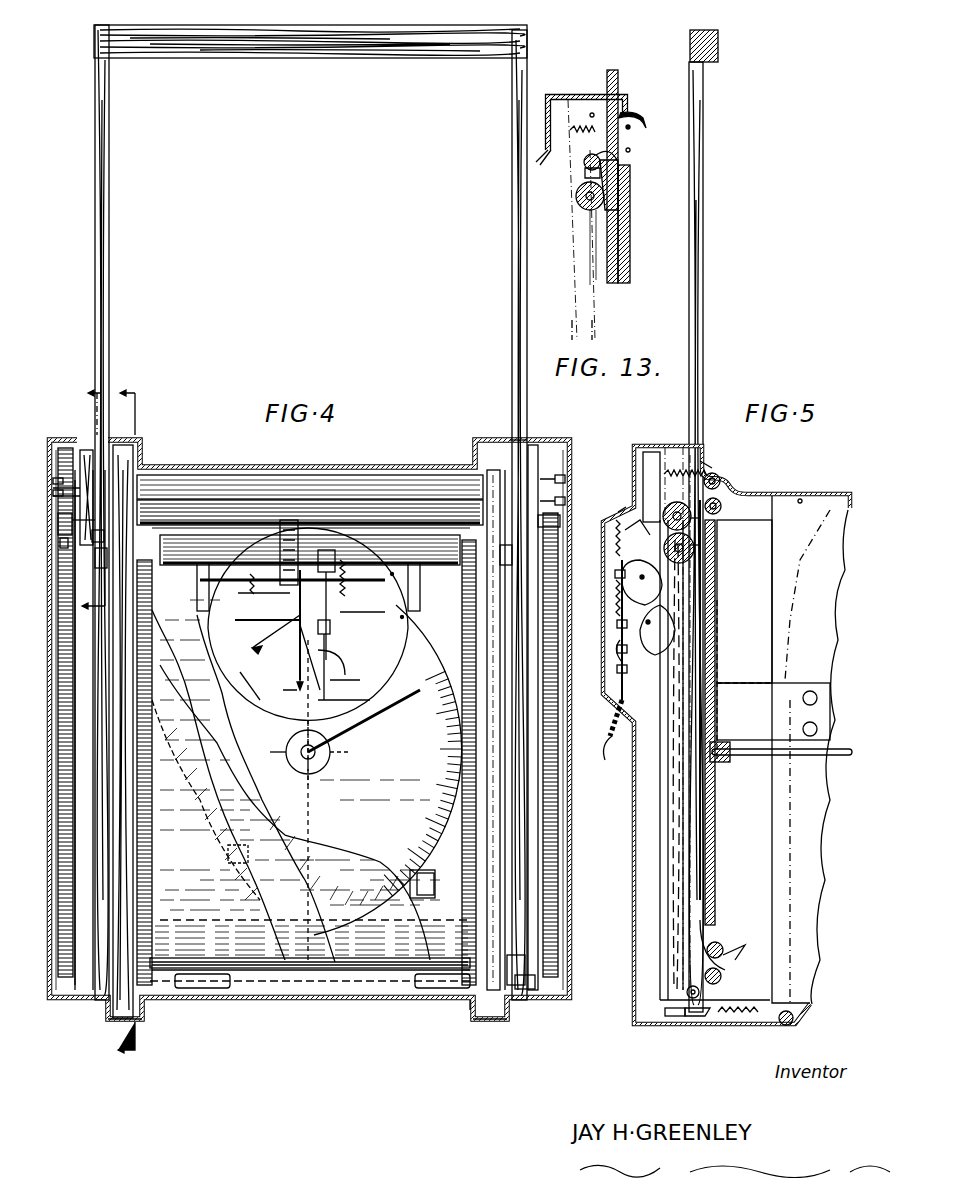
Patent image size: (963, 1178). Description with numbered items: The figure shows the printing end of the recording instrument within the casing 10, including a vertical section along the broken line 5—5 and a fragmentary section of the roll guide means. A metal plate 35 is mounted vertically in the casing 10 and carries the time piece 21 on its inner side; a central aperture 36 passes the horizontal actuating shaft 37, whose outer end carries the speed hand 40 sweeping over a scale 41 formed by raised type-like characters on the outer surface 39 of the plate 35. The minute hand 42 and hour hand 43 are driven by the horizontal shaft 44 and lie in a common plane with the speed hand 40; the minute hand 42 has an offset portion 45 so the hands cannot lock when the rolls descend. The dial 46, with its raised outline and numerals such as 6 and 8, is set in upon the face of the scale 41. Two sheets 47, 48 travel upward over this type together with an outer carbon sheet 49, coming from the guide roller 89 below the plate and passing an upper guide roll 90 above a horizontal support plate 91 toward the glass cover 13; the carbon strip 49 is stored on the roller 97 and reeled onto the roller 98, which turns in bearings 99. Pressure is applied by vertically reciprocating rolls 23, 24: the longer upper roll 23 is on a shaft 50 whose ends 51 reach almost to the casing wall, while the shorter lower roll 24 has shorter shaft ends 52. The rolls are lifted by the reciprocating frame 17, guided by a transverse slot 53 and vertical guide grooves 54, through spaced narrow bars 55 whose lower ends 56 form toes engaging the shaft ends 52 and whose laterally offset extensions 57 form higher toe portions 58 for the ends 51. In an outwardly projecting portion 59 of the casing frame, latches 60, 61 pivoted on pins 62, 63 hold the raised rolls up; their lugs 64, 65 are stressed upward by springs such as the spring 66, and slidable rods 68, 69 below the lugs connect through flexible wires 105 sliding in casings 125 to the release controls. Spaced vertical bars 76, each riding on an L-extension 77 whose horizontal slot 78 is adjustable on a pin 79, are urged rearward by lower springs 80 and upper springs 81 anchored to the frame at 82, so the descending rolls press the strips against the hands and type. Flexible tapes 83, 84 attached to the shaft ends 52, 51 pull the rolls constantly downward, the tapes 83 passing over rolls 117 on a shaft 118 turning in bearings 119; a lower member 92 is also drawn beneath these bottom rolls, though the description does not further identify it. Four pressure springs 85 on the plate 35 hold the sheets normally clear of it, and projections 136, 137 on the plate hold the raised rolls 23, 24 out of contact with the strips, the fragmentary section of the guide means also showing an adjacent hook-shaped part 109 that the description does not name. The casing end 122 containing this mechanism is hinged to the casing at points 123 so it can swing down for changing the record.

In FIG. 4, the section line 5 is at (113, 715).
In FIG. 4, the pivot point 6 is at (399, 619).
In FIG. 4, the pivot point 8 is at (386, 576).
In FIG. 4, the casing 10 is at (571, 855).
In FIG. 5, the casing 10 is at (810, 1018).
In FIG. 4, the glass cover 13 is at (88, 493).
In FIG. 4, the vertically reciprocating frame 17 is at (440, 48).
In FIG. 5, the vertically reciprocating frame 17 is at (718, 44).
In FIG. 5, the time piece 21 is at (744, 601).
In FIG. 4, the upper pressure roll 23 is at (416, 512).
In FIG. 13, the upper pressure roll 23 is at (585, 165).
In FIG. 5, the upper pressure roll 23 is at (728, 536).
In FIG. 4, the lower pressure roll 24 is at (380, 545).
In FIG. 13, the lower pressure roll 24 is at (577, 197).
In FIG. 5, the lower pressure roll 24 is at (698, 558).
In FIG. 4, the metal plate 35 is at (433, 890).
In FIG. 13, the metal plate 35 is at (629, 247).
In FIG. 5, the metal plate 35 is at (714, 858).
In FIG. 4, the central aperture 36 is at (274, 751).
In FIG. 5, the central aperture 36 is at (722, 735).
In FIG. 4, the horizontal actuating shaft 37 is at (324, 800).
In FIG. 5, the horizontal actuating shaft 37 is at (752, 756).
In FIG. 4, the outer surface 39 is at (335, 749).
In FIG. 5, the outer surface 39 is at (712, 652).
In FIG. 4, the speed hand 40 is at (364, 721).
In FIG. 4, the scale 41 is at (470, 632).
In FIG. 4, the minute hand 42 is at (298, 662).
In FIG. 4, the hour hand 43 is at (276, 642).
In FIG. 4, the horizontal shaft 44 is at (274, 625).
In FIG. 4, the offset portion 45 is at (280, 655).
In FIG. 4, the dial 46 is at (243, 689).
In FIG. 4, the sheet 47 is at (345, 845).
In FIG. 5, the sheet 47 is at (737, 943).
In FIG. 4, the sheet 48 is at (300, 790).
In FIG. 5, the sheet 48 is at (725, 975).
In FIG. 4, the carbon sheet 49 is at (252, 972).
In FIG. 5, the carbon sheet 49 is at (715, 960).
In FIG. 4, the shaft 50 is at (62, 541).
In FIG. 5, the shaft 50 is at (618, 511).
In FIG. 4, the shaft ends 51 is at (58, 521).
In FIG. 4, the shaft ends 52 is at (301, 559).
In FIG. 4, the transverse slot 53 is at (512, 442).
In FIG. 4, the vertical guide grooves 54 is at (100, 670).
In FIG. 4, the spaced narrow bars 55 is at (110, 265).
In FIG. 5, the spaced narrow bars 55 is at (705, 180).
In FIG. 4, the lower ends 56 is at (90, 539).
In FIG. 4, the laterally offset extensions 57 is at (86, 452).
In FIG. 4, the toe portions 58 is at (55, 490).
In FIG. 5, the outwardly projecting portion 59 is at (600, 650).
In FIG. 4, the latch 60 is at (305, 520).
In FIG. 5, the latch 60 is at (642, 581).
In FIG. 4, the latch 61 is at (330, 552).
In FIG. 5, the latch 61 is at (657, 626).
In FIG. 4, the pin 62 is at (304, 578).
In FIG. 5, the pin 62 is at (612, 560).
In FIG. 4, the pin 63 is at (364, 600).
In FIG. 5, the pin 63 is at (641, 638).
In FIG. 4, the lug 64 is at (264, 599).
In FIG. 5, the lug 64 is at (615, 576).
In FIG. 4, the lug 65 is at (332, 630).
In FIG. 5, the lug 65 is at (633, 651).
In FIG. 4, the spring 66 is at (272, 525).
In FIG. 4, the vertically slidable rod 68 is at (333, 675).
In FIG. 5, the vertically slidable rod 68 is at (600, 668).
In FIG. 4, the vertically slidable rod 69 is at (349, 683).
In FIG. 5, the vertically slidable rod 69 is at (638, 675).
In FIG. 4, the vertical bars 76 is at (125, 878).
In FIG. 13, the vertical bars 76 is at (595, 312).
In FIG. 5, the vertical bars 76 is at (670, 758).
In FIG. 5, the L-extension 77 is at (697, 1030).
In FIG. 5, the horizontal slot 78 is at (690, 1008).
In FIG. 4, the pin 79 is at (466, 1012).
In FIG. 5, the pin 79 is at (668, 1012).
In FIG. 5, the springs 80 is at (738, 1030).
In FIG. 13, the springs 81 is at (583, 100).
In FIG. 5, the springs 81 is at (668, 470).
In FIG. 5, the frame attachment point 82 is at (713, 468).
In FIG. 4, the flexible tapes 83 is at (150, 866).
In FIG. 5, the flexible tapes 83 is at (680, 900).
In FIG. 4, the flexible tapes 84 is at (66, 775).
In FIG. 5, the flexible tapes 84 is at (686, 730).
In FIG. 4, the pressure springs 85 is at (199, 578).
In FIG. 5, the pressure springs 85 is at (716, 603).
In FIG. 4, the guide roller 89 is at (510, 958).
In FIG. 5, the guide roller 89 is at (716, 942).
In FIG. 4, the upper guide roll 90 is at (440, 506).
In FIG. 5, the upper guide roll 90 is at (728, 510).
In FIG. 5, the horizontal support plate 91 is at (806, 504).
In FIG. 4, the rod 92 is at (380, 992).
In FIG. 5, the roller 97 is at (720, 980).
In FIG. 4, the roller 98 is at (458, 470).
In FIG. 5, the roller 98 is at (721, 482).
In FIG. 4, the bearings 99 is at (55, 478).
In FIG. 5, the flexible steel wires 105 is at (607, 755).
In FIG. 13, the hook 109 is at (645, 118).
In FIG. 4, the rolls 117 is at (140, 1012).
In FIG. 4, the shaft 118 is at (318, 970).
In FIG. 4, the bearings 119 is at (210, 990).
In FIG. 5, the casing end 122 is at (628, 478).
In FIG. 5, the hinge points 123 is at (793, 1022).
In FIG. 5, the casings 125 is at (600, 710).
In FIG. 13, the projections 136 is at (605, 160).
In FIG. 5, the projections 136 is at (697, 522).
In FIG. 13, the projections 137 is at (625, 186).
In FIG. 5, the projections 137 is at (697, 545).